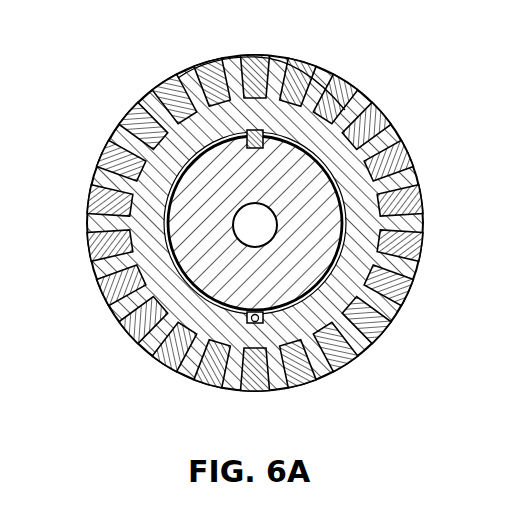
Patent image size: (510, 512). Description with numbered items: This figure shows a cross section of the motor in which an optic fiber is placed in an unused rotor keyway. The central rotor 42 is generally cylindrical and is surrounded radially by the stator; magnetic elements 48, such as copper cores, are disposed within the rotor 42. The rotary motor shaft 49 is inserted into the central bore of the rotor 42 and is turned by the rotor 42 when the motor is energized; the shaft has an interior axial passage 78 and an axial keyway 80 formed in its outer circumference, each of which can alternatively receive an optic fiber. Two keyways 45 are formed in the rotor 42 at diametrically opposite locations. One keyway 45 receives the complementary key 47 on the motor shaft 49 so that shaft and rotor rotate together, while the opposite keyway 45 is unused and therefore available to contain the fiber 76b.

The rotor 42 is at (393, 128).
The keyway 45 is at (247, 131).
The key 47 is at (263, 131).
The magnetic elements 48 is at (408, 198).
The motor shaft 49 is at (388, 250).
The interior axial passage 78 is at (238, 217).
The axial keyway 80 is at (265, 150).
The fiber 76b is at (248, 321).